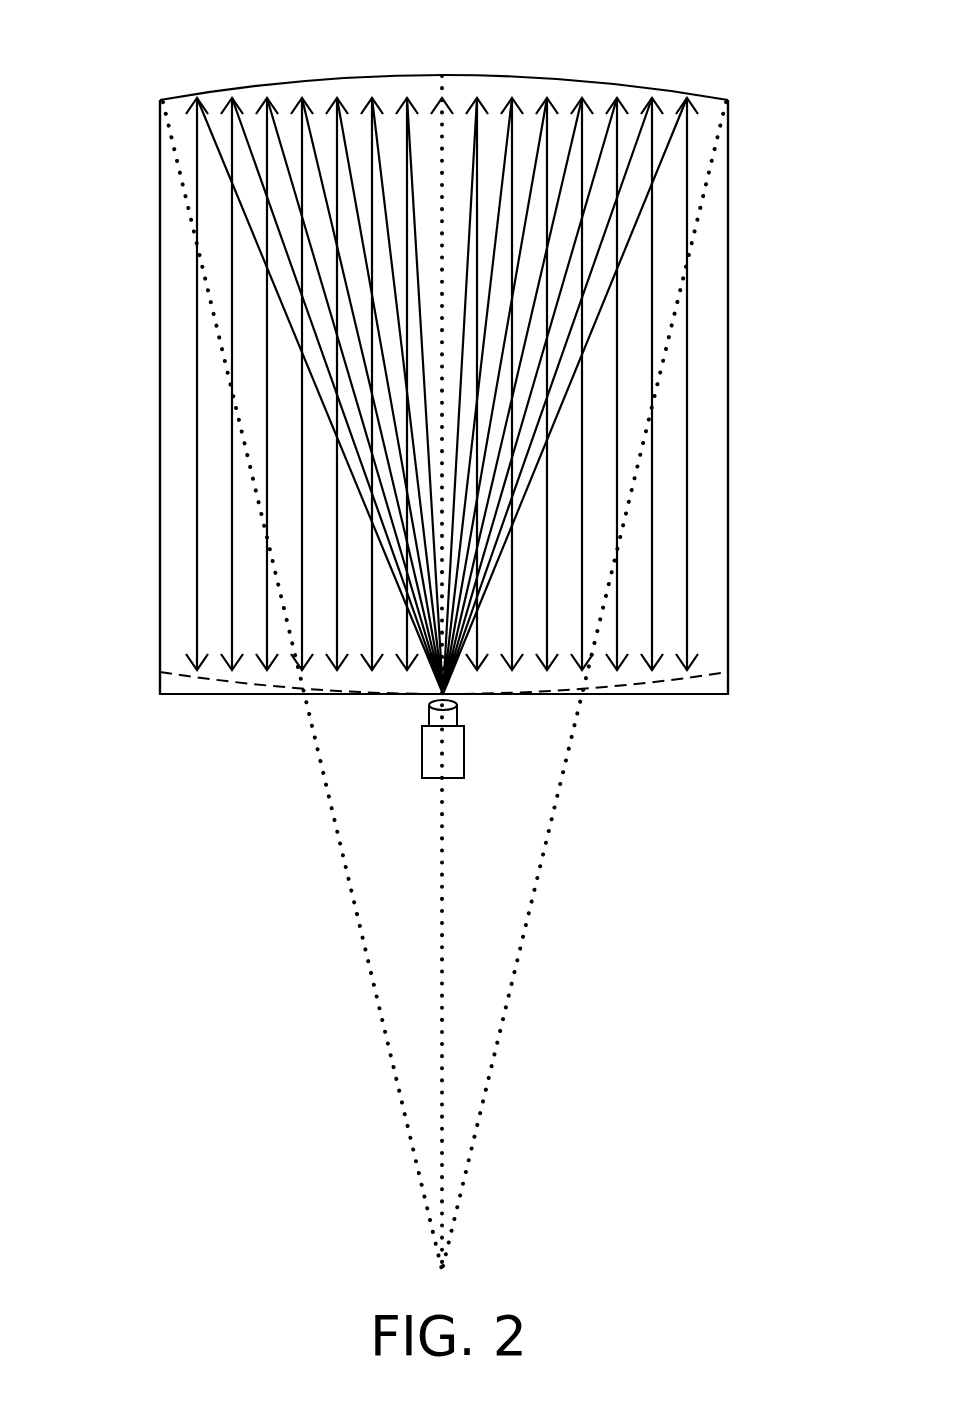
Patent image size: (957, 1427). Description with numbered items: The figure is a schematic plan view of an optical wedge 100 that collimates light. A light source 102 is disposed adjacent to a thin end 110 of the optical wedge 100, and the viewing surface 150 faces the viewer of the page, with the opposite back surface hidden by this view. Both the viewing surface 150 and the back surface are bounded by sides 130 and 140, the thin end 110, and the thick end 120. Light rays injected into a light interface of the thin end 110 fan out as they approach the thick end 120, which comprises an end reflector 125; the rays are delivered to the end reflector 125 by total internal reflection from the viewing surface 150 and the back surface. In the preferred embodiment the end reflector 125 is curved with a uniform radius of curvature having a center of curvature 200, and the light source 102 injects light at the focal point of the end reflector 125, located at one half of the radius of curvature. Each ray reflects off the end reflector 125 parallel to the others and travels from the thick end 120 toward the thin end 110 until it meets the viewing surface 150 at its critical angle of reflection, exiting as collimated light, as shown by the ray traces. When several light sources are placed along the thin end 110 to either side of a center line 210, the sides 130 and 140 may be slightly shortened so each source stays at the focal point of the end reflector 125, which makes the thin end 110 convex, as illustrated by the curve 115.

The optical wedge 100 is at (766, 85).
The light source 102 is at (457, 756).
The thin end 110 is at (608, 697).
The curve 115 is at (702, 680).
The thick end 120 is at (480, 47).
The end reflector 125 is at (557, 80).
The side 130 is at (728, 330).
The side 140 is at (160, 287).
The viewing surface 150 is at (712, 495).
The center of curvature 200 is at (455, 1276).
The center line 210 is at (442, 957).